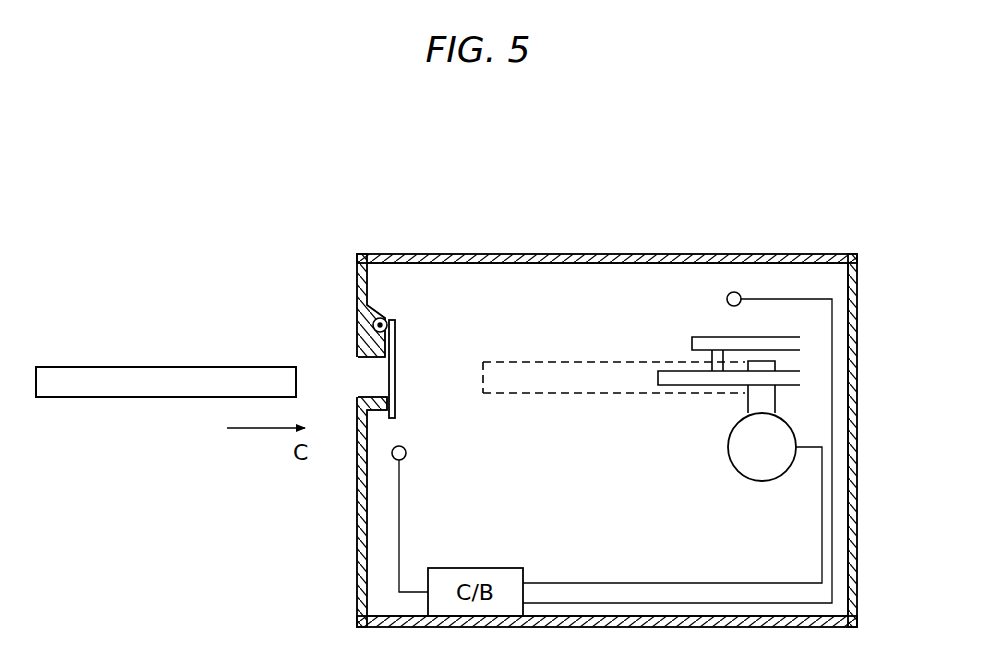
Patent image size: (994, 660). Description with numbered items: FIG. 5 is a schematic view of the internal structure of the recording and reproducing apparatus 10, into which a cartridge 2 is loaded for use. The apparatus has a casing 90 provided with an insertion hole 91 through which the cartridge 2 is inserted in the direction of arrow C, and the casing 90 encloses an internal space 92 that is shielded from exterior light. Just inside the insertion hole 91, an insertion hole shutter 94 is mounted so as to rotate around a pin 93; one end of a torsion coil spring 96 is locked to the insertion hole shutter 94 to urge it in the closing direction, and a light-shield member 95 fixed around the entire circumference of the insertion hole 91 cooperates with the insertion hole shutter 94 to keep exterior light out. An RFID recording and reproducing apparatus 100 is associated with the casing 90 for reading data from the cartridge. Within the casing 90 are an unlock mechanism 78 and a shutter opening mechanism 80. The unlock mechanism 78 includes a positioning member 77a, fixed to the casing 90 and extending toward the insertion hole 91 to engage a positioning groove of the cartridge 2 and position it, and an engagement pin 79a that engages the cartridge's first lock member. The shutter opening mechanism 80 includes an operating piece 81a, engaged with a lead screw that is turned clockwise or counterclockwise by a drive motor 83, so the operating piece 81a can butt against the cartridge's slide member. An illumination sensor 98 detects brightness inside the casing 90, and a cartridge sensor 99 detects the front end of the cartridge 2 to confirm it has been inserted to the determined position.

The recording and reproducing apparatus 10 is at (571, 392).
The casing 90 is at (571, 392).
The RFID recording and reproducing apparatus 100 is at (338, 247).
The internal space 92 is at (556, 290).
The insertion hole 91 is at (356, 372).
The pin 93 is at (372, 321).
The torsion coil spring 96 is at (432, 390).
The insertion hole shutter 94 is at (432, 393).
The light-shield member 95 is at (396, 414).
The illumination sensor 98 is at (405, 460).
The cartridge sensor 99 is at (733, 291).
The unlock mechanism 78 is at (678, 351).
The engagement pin 79a is at (716, 361).
The positioning member 77a is at (681, 386).
The operating piece 81a is at (777, 400).
The shutter opening mechanism 80 is at (672, 498).
The drive motor 83 is at (760, 468).
The cartridge 2 is at (130, 360).